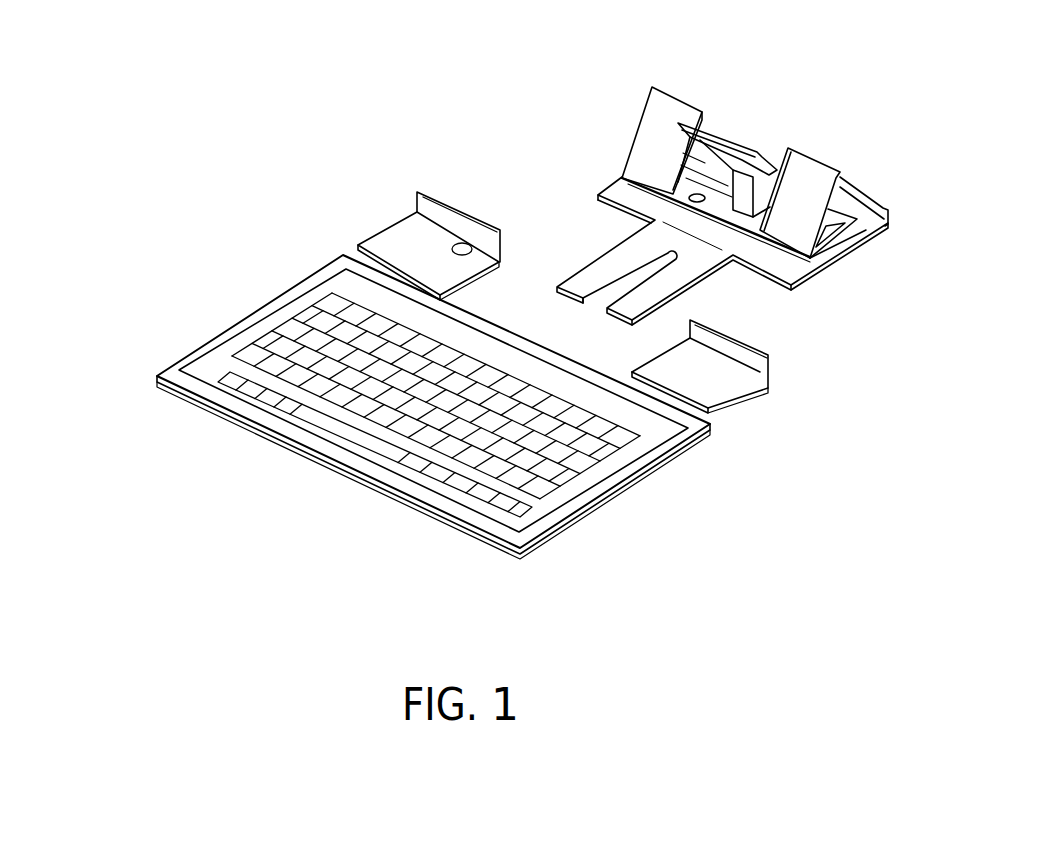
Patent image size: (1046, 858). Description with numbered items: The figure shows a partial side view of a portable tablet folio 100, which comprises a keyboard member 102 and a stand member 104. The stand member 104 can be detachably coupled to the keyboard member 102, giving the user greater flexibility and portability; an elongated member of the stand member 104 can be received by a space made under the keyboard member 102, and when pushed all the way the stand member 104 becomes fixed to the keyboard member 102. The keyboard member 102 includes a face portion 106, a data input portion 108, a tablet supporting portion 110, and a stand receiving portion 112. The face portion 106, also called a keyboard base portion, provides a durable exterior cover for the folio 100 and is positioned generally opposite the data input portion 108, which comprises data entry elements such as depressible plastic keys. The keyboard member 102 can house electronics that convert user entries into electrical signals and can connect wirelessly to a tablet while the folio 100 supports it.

The portable tablet folio 100 is at (187, 202).
The keyboard member 102 is at (242, 307).
The stand member 104 is at (607, 100).
The face portion 106 is at (473, 530).
The data input portion 108 is at (577, 477).
The tablet supporting portion 110 is at (730, 402).
The stand receiving portion 112 is at (505, 317).